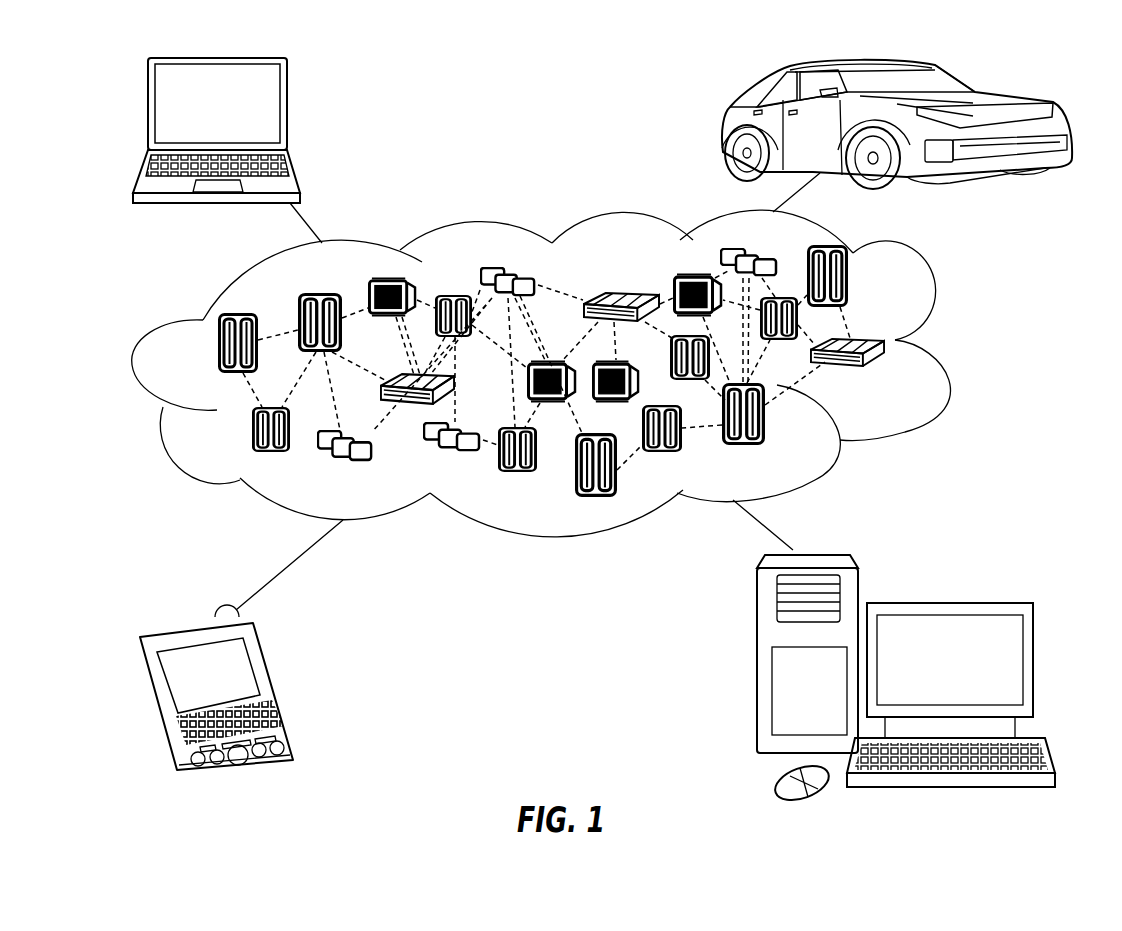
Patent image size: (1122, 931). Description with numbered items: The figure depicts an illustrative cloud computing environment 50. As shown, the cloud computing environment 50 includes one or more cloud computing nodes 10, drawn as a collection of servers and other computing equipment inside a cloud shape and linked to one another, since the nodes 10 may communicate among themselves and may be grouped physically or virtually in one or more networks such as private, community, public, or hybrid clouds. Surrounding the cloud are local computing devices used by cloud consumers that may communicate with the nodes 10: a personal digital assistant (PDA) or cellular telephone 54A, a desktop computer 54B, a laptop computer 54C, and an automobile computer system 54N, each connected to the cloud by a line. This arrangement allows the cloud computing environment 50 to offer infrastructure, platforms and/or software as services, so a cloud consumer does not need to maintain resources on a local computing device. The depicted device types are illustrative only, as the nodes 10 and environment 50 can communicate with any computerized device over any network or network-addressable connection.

The cloud computing nodes 10 is at (886, 381).
The cloud computing environment 50 is at (946, 355).
The personal digital assistant (PDA) or cellular telephone 54A is at (278, 686).
The desktop computer 54B is at (947, 603).
The laptop computer 54C is at (287, 112).
The automobile computer system 54N is at (730, 128).